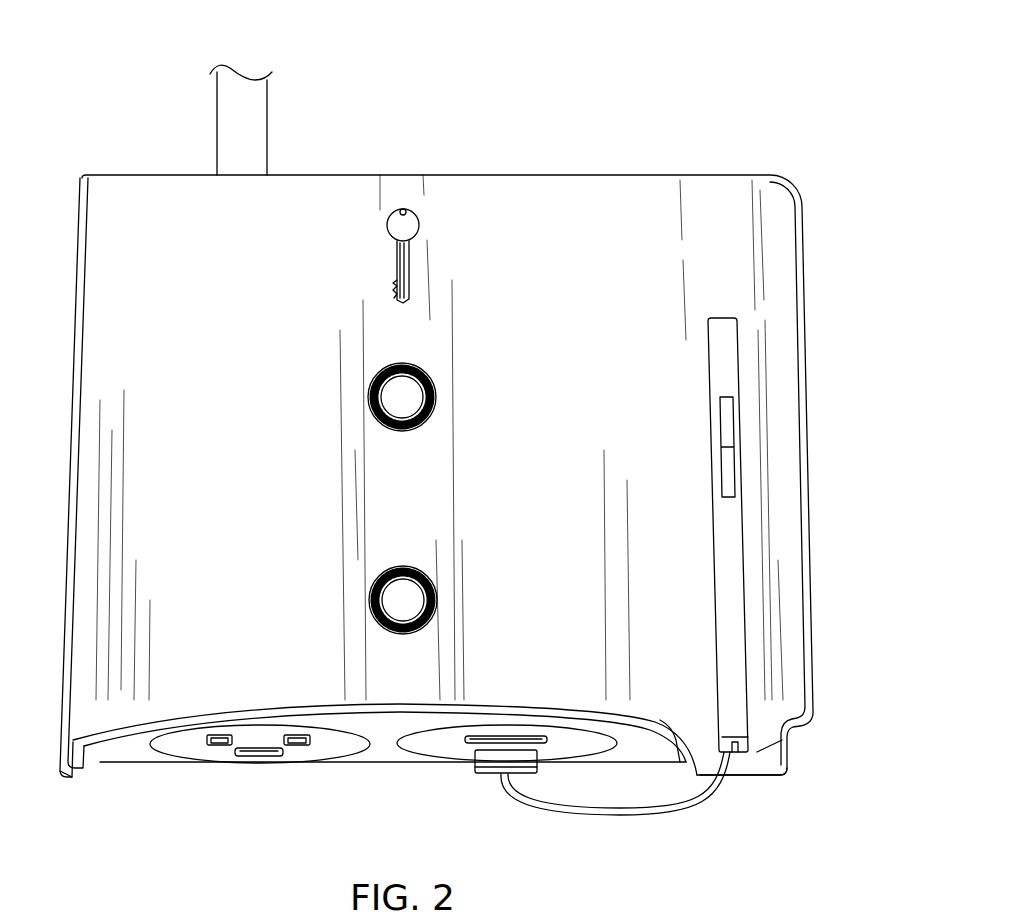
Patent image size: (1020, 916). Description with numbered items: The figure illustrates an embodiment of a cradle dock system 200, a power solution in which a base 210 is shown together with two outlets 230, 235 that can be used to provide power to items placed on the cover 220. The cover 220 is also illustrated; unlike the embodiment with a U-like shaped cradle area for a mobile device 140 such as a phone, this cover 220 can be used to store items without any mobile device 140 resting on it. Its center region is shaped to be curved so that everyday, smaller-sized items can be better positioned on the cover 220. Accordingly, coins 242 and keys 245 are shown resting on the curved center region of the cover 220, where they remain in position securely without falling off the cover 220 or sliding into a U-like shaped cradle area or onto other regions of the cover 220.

The cradle dock system 200 is at (716, 46).
The base 210 is at (112, 763).
The cover 220 is at (583, 430).
The outlet 230 is at (222, 758).
The outlet 235 is at (487, 774).
The coins 242 is at (413, 566).
The keys 245 is at (400, 210).
The mobile device 140 is at (740, 724).